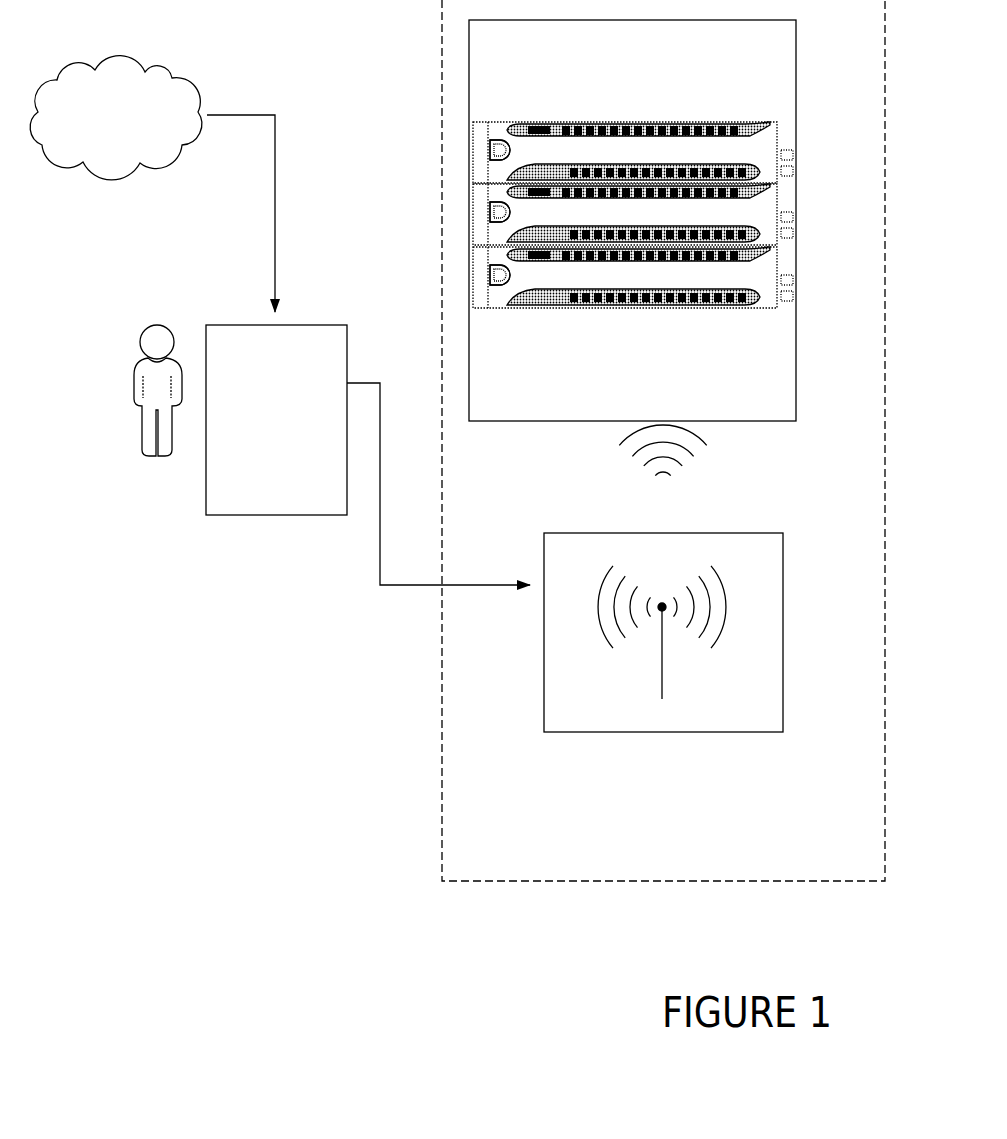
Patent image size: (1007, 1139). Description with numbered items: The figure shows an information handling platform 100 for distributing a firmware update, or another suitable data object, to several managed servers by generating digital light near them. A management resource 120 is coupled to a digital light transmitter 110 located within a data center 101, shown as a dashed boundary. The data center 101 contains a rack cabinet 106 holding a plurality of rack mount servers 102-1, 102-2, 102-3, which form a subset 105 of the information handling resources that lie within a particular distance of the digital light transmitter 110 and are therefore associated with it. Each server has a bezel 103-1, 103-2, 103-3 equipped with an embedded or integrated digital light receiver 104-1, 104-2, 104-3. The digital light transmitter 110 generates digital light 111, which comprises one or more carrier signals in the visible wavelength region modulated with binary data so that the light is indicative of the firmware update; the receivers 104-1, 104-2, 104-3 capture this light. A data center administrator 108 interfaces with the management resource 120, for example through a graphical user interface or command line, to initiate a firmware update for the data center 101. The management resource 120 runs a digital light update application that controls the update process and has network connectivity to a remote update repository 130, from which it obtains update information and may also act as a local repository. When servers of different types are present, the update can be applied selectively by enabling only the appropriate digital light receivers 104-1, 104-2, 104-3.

The information handling platform 100 is at (302, 745).
The data center 101 is at (441, 95).
The rack mount server 102-1 is at (674, 150).
The rack mount server 102-2 is at (674, 213).
The rack mount server 102-3 is at (674, 276).
The bezel 103-1 is at (767, 143).
The bezel 103-2 is at (767, 206).
The bezel 103-3 is at (767, 270).
The digital light receiver 104-1 is at (524, 146).
The digital light receiver 104-2 is at (530, 216).
The digital light receiver 104-3 is at (530, 282).
The subset of information handling resources 105 is at (554, 504).
The rack cabinet 106 is at (796, 63).
The data center administrator 108 is at (135, 413).
The digital light transmitter 110 is at (544, 720).
The digital light 111 is at (690, 468).
The management resource 120 is at (206, 492).
The remote repository 130 is at (172, 67).